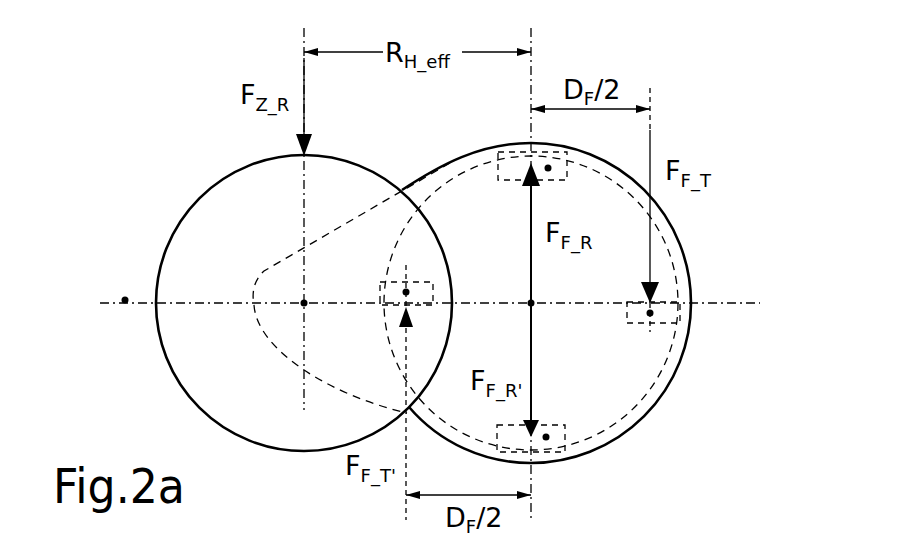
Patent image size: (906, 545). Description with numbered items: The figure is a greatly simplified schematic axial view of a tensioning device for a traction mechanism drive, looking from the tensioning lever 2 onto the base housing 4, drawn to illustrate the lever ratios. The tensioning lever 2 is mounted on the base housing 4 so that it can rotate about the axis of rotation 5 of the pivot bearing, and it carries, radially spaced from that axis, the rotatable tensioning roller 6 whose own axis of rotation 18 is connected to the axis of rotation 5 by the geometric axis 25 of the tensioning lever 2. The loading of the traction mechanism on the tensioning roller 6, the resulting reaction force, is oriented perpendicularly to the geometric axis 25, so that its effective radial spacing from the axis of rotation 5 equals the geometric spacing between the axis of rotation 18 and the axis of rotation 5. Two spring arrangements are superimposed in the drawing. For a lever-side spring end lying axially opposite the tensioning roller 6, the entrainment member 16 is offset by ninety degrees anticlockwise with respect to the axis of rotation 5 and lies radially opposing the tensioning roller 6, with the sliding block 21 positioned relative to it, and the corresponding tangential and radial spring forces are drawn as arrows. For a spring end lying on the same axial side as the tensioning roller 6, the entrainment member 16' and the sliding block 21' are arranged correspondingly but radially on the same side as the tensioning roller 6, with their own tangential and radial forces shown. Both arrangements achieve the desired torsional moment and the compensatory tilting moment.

The tensioning lever 2 is at (410, 162).
The base housing 4 is at (640, 415).
The axis of rotation of the pivot bearing 5 is at (531, 303).
The tensioning roller 6 is at (230, 364).
The entrainment member 16 is at (701, 325).
The entrainment member 16' is at (310, 259).
The axis of rotation of the tensioning roller 18 is at (304, 303).
The sliding block 21 is at (627, 203).
The sliding block 21' is at (588, 465).
The geometric axis of the tensioning lever 25 is at (125, 300).